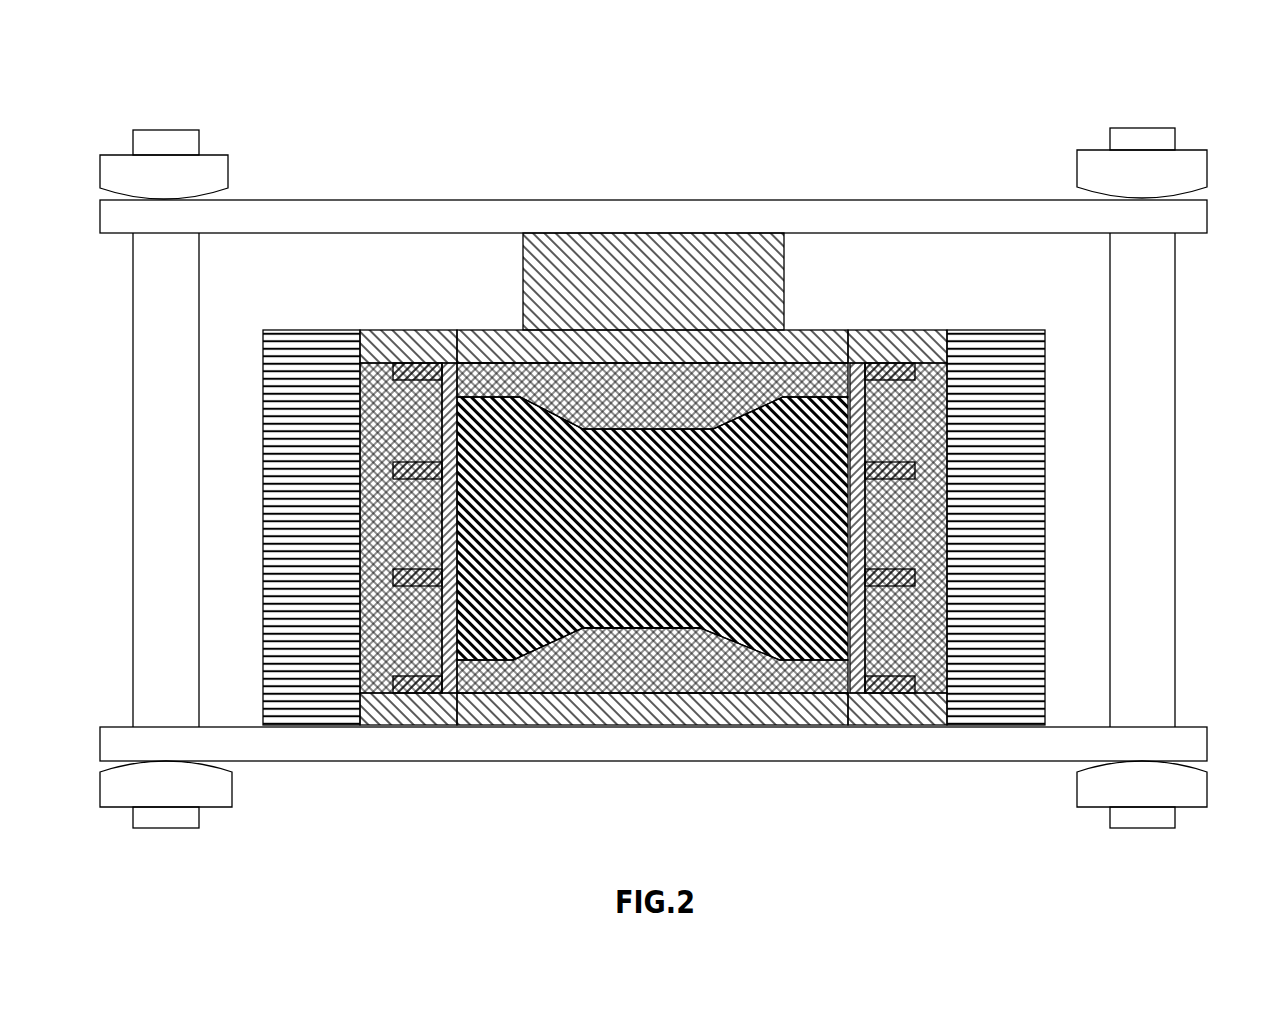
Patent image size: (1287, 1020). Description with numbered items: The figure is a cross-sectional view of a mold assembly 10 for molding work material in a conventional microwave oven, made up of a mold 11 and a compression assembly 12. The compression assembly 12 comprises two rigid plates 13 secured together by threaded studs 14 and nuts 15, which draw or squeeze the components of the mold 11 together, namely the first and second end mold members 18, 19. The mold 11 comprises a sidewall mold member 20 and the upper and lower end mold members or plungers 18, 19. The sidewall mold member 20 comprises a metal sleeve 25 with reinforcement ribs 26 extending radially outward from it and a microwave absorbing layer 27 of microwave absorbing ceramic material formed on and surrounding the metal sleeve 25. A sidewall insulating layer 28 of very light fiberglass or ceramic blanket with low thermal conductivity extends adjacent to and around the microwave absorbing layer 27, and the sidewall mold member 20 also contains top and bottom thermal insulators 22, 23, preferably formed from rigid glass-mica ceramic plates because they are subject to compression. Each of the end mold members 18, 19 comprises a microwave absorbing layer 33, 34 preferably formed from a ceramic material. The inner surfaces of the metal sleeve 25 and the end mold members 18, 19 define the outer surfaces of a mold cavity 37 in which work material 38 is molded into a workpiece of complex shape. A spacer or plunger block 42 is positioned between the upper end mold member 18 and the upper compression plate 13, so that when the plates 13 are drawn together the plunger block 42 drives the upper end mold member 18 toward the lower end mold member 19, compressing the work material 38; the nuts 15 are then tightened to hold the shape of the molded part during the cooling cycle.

The mold assembly 10 is at (608, 160).
The mold 11 is at (327, 312).
The compression assembly 12 is at (1030, 175).
The rigid plate 13 is at (767, 210).
The threaded stud 14 is at (1176, 420).
The nut 15 is at (123, 170).
The first end mold member 18 is at (629, 219).
The second end mold member 19 is at (653, 771).
The sidewall mold member 20 is at (366, 312).
The top thermal insulator 22 is at (383, 338).
The bottom thermal insulator 23 is at (418, 716).
The metal sleeve 25 is at (448, 392).
The reinforcement rib 26 is at (417, 368).
The microwave absorbing layer 27 is at (912, 420).
The sidewall insulating layer 28 is at (314, 675).
The microwave absorbing layer 33 is at (786, 370).
The microwave absorbing layer 34 is at (819, 342).
The mold cavity 37 is at (658, 621).
The work material 38 is at (769, 580).
The plunger block 42 is at (647, 258).